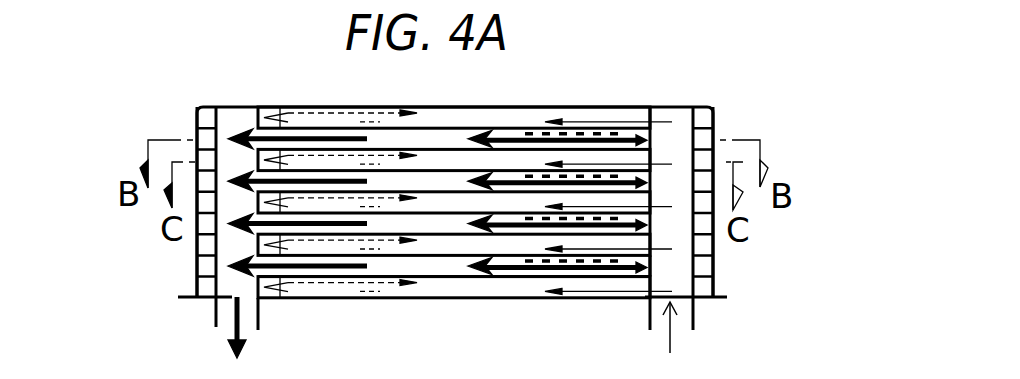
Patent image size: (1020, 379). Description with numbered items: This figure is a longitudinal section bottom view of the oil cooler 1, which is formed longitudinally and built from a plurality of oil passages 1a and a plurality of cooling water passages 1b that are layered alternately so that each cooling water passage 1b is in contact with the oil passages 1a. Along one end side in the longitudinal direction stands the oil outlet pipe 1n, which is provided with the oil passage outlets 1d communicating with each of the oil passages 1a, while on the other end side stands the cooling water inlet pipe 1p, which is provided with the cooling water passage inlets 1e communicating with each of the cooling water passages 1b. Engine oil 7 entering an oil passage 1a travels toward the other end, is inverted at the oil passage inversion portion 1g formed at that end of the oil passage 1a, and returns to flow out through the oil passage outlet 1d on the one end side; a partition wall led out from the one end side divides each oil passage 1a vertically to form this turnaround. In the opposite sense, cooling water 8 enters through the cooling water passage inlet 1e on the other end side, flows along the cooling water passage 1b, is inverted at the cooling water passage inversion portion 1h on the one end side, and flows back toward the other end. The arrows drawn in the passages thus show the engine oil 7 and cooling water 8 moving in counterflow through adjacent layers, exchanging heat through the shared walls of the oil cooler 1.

The oil cooler 1 is at (700, 103).
The oil passage 1a is at (449, 182).
The cooling water passage 1b is at (436, 198).
The oil passage outlet 1d is at (307, 282).
The cooling water passage inlet 1e is at (650, 285).
The oil passage inversion portion 1g is at (623, 282).
The cooling water passage inversion portion 1h is at (274, 299).
The oil outlet pipe 1n is at (196, 267).
The cooling water inlet pipe 1p is at (716, 265).
The engine oil 7 is at (231, 266).
The cooling water 8 is at (667, 250).